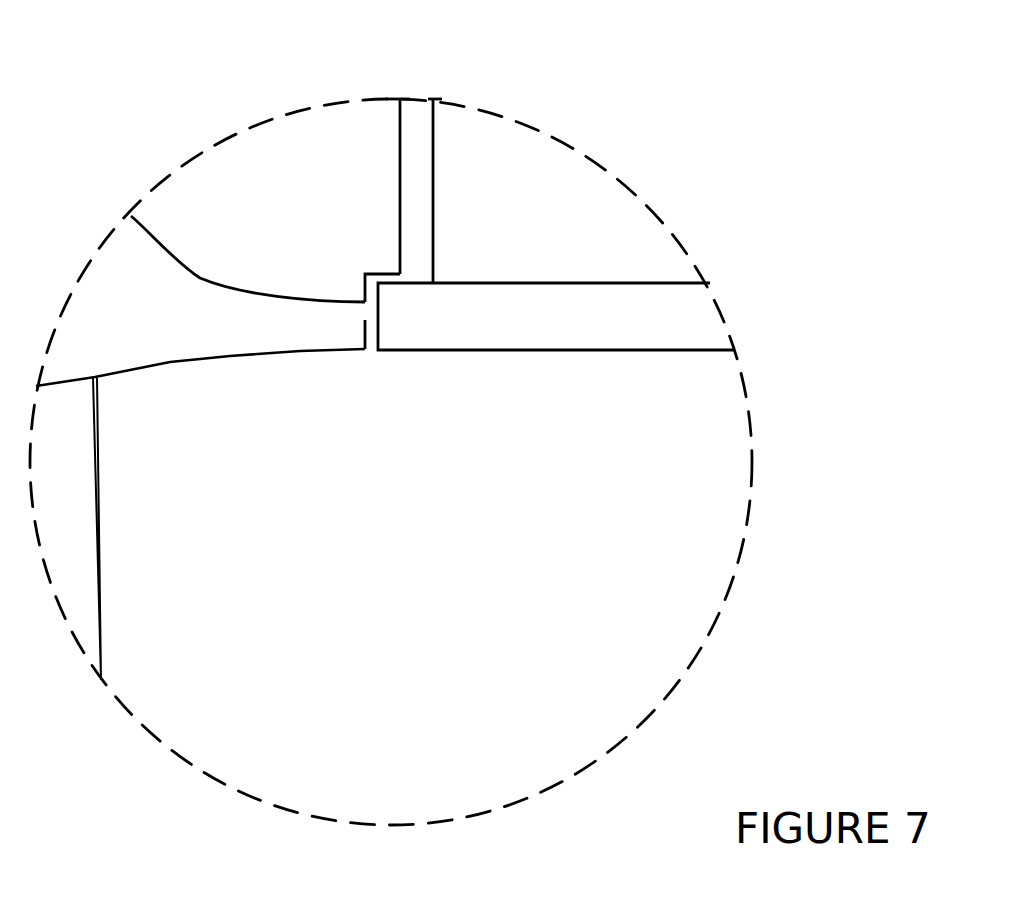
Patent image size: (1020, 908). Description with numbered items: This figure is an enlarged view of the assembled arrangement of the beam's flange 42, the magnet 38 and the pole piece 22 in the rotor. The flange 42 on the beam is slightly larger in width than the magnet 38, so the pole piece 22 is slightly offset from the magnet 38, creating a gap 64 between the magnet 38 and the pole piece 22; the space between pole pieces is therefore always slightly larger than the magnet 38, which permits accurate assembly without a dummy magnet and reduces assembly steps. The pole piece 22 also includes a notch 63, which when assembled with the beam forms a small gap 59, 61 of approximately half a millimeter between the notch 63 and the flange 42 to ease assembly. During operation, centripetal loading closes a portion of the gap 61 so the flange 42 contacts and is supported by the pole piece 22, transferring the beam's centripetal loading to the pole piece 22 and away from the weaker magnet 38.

The pole piece 22 is at (296, 228).
The magnet 38 is at (532, 210).
The flange 42 is at (636, 287).
The gap 59 is at (372, 358).
The gap 61 is at (392, 272).
The notch 63 is at (131, 216).
The gap 64 is at (418, 124).